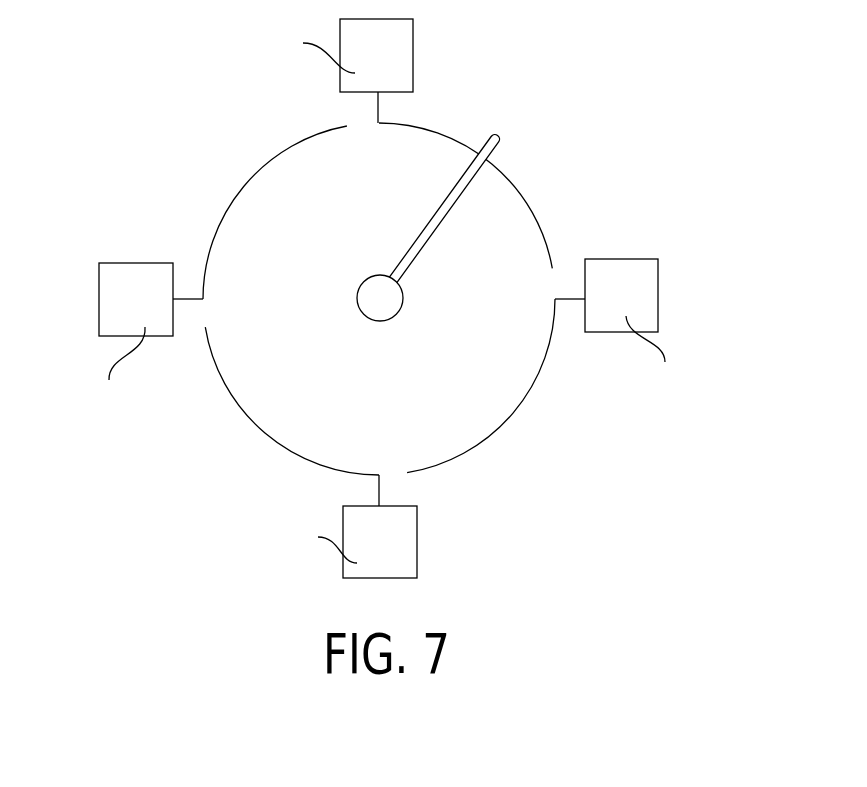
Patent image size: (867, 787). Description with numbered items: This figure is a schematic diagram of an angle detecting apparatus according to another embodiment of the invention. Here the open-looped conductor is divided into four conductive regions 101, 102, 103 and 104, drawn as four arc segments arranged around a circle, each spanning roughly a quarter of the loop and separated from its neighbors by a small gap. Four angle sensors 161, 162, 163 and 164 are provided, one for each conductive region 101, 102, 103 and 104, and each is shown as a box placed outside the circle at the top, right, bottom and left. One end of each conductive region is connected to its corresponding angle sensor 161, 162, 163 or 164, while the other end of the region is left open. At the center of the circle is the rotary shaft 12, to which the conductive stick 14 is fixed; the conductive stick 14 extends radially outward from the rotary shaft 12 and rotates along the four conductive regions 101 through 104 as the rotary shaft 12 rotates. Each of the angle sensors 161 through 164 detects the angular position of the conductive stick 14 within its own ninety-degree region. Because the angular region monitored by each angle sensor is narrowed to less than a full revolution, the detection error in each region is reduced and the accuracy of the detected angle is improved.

The rotary shaft 12 is at (350, 307).
The conductive stick 14 is at (437, 210).
The conductive region 101 is at (237, 195).
The conductive region 102 is at (527, 197).
The conductive region 103 is at (517, 410).
The conductive region 104 is at (255, 423).
The angle sensor 161 is at (97, 298).
The angle sensor 162 is at (413, 50).
The angle sensor 163 is at (658, 273).
The angle sensor 164 is at (417, 540).